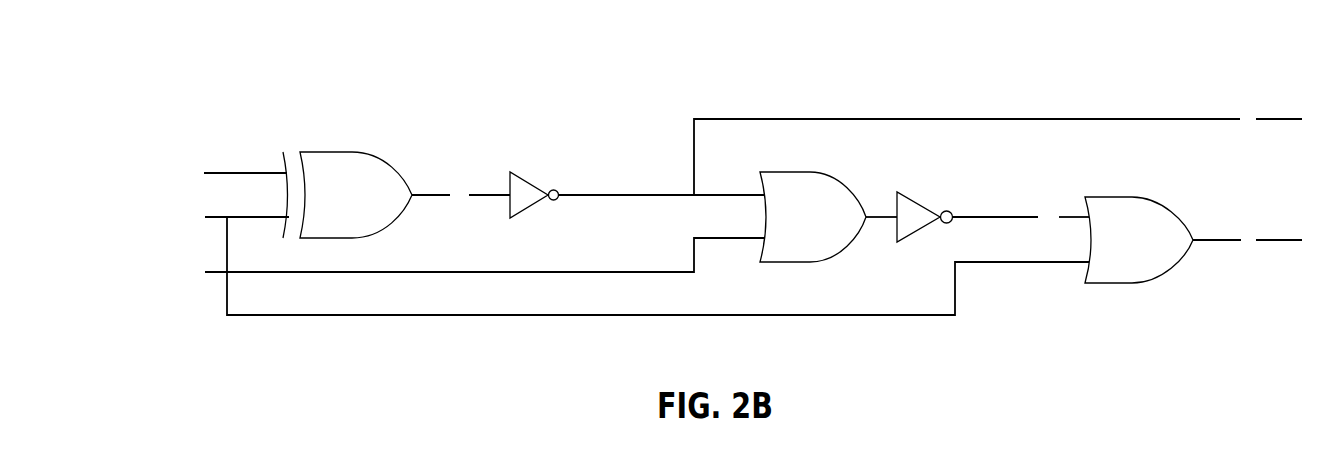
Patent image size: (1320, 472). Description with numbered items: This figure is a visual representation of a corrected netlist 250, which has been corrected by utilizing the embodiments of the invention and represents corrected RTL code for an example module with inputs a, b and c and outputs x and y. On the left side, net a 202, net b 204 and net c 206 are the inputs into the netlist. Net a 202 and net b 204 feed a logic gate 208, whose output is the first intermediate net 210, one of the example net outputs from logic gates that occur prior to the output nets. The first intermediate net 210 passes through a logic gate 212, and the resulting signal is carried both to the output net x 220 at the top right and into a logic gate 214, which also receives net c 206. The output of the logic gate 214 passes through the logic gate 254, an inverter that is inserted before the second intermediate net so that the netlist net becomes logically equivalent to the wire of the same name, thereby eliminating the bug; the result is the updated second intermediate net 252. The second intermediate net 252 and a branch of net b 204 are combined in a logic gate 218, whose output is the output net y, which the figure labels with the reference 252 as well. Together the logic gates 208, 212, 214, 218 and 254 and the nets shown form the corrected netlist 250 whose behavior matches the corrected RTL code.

The corrected netlist 250 is at (228, 92).
The net a 202 is at (190, 173).
The net b 204 is at (190, 217).
The net c 206 is at (190, 272).
The logic gate 208 is at (347, 195).
The net t1 210 is at (459, 207).
The logic gate 212 is at (533, 177).
The logic gate 214 is at (828, 217).
The logic gate 218 is at (1139, 240).
The net x 220 is at (1250, 132).
The net t2 252 is at (1044, 203).
The logic gate 254 is at (932, 195).